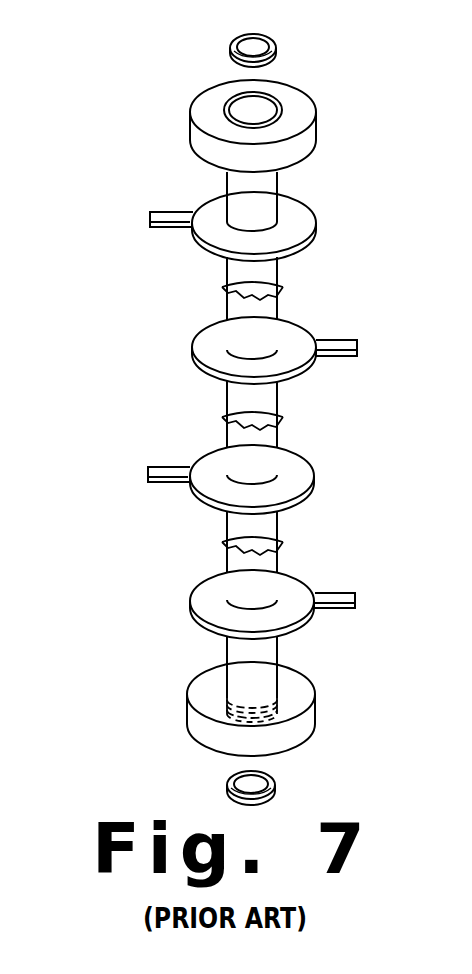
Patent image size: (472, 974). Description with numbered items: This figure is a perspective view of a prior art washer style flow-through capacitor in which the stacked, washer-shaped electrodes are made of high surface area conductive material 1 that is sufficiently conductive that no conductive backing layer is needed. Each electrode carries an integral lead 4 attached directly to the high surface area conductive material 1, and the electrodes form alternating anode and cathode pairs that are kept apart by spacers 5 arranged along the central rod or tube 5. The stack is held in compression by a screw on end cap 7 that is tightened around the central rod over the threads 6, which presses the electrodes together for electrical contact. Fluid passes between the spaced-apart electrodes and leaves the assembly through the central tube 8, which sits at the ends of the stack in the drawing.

The high surface area conductive material 1 is at (300, 213).
The integral lead 4 is at (170, 206).
The spacer 5 is at (278, 398).
The threads 6 is at (266, 700).
The screw on end cap 7 is at (303, 137).
The central tube 8 is at (275, 42).